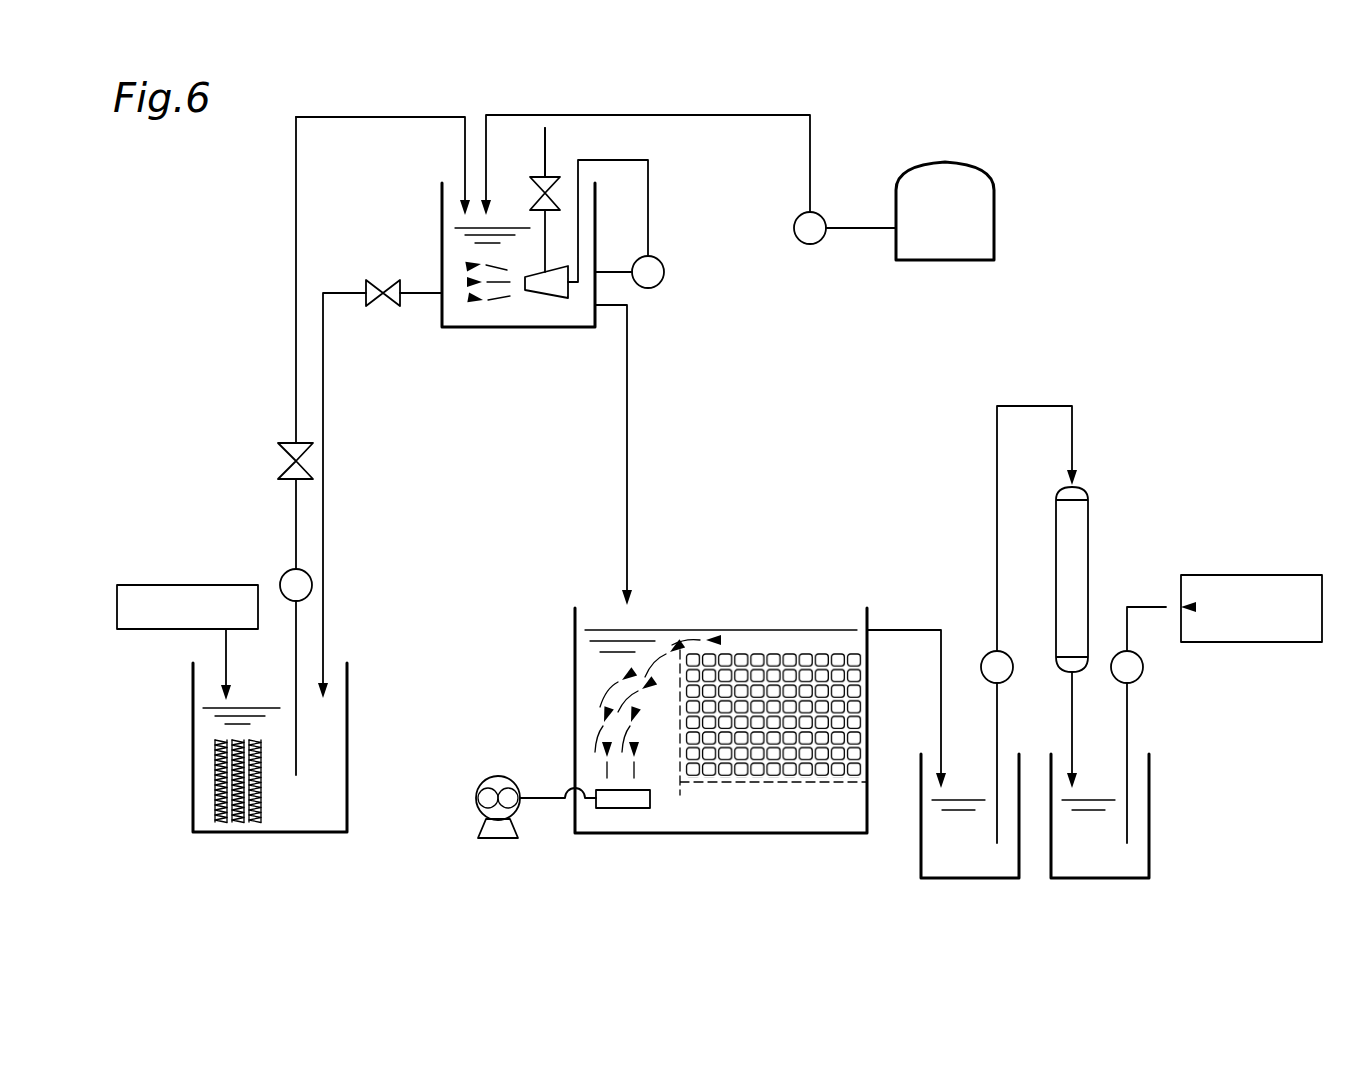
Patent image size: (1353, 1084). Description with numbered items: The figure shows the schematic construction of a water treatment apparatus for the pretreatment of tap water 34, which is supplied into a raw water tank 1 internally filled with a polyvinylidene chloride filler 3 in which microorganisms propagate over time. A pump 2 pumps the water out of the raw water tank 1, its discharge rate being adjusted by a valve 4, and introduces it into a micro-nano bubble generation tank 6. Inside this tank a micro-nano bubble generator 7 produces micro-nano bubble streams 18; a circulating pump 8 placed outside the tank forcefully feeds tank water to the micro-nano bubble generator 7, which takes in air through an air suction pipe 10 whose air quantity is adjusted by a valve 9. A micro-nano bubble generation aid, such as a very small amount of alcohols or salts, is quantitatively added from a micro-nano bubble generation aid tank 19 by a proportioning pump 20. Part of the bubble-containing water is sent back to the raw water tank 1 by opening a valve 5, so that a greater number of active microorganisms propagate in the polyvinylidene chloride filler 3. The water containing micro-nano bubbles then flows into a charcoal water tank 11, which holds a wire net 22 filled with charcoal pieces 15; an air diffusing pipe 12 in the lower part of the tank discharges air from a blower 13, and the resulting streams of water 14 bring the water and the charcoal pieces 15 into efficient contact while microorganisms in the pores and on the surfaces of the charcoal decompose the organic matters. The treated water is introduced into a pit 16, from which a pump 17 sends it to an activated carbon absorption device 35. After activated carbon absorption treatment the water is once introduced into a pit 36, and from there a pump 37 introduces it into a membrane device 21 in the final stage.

The raw water tank 1 is at (193, 797).
The pump 2 is at (282, 580).
The polyvinylidene chloride filler 3 is at (262, 800).
The valve 4 is at (290, 443).
The valve 5 is at (378, 305).
The micro-nano bubble generation tank 6 is at (480, 330).
The micro-nano bubble generator 7 is at (556, 300).
The circulating pump 8 is at (663, 280).
The valve 9 is at (537, 200).
The air suction pipe 10 is at (545, 143).
The charcoal water tank 11 is at (572, 660).
The air diffusing pipe 12 is at (632, 810).
The blower 13 is at (478, 806).
The streams of water 14 is at (623, 745).
The charcoal pieces 15 is at (775, 650).
The pit 16 is at (920, 858).
The pump 17 is at (982, 663).
The micro-nano bubble streams 18 is at (478, 278).
The micro-nano bubble generation aid tank 19 is at (996, 205).
The proportioning pump 20 is at (810, 245).
The membrane device 21 is at (1280, 575).
The wire net 22 is at (718, 784).
The tap water 34 is at (160, 585).
The activated carbon absorption device 35 is at (1090, 520).
The pit 36 is at (1150, 860).
The pump 37 is at (1143, 667).